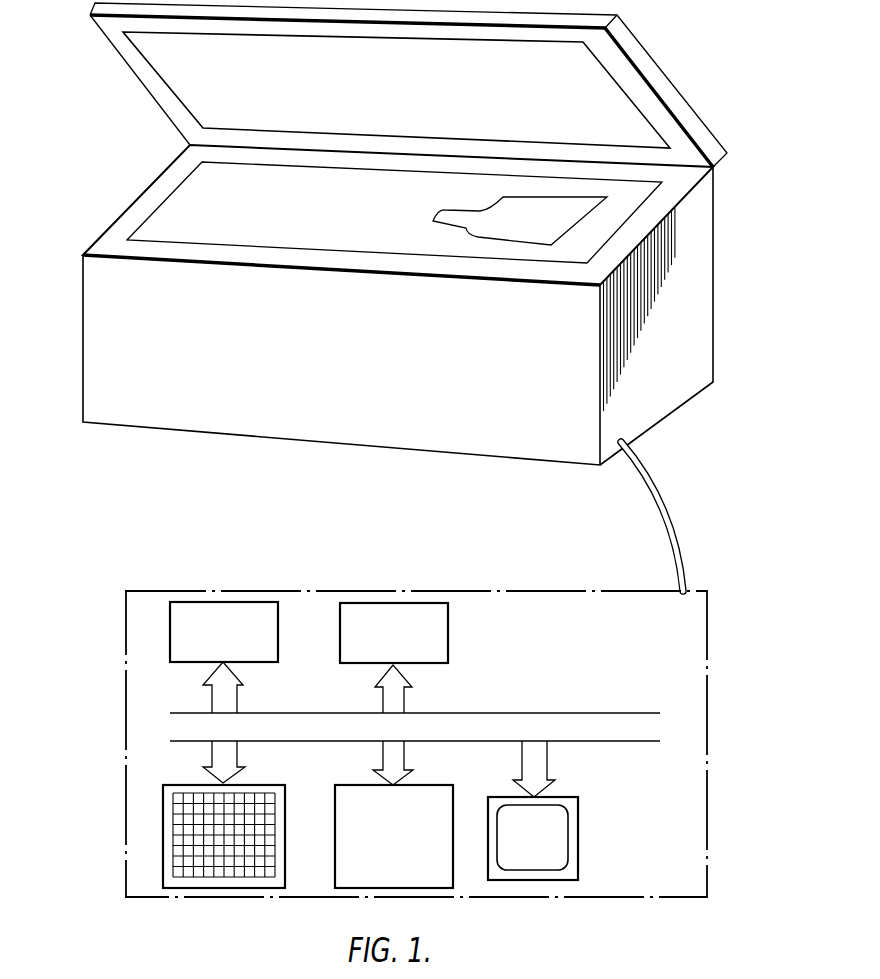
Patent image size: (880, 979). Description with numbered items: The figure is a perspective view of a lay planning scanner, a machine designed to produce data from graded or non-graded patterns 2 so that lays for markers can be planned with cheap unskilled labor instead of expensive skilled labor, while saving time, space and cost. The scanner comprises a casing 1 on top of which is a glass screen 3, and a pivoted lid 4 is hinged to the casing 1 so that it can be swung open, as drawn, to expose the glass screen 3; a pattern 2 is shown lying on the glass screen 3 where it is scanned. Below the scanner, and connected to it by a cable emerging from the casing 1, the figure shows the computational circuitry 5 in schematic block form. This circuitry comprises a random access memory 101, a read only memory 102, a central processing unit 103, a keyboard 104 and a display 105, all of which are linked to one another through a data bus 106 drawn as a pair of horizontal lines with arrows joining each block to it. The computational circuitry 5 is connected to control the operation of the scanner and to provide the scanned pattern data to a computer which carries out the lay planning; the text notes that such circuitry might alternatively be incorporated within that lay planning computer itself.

The casing 1 is at (675, 409).
The pattern 2 is at (580, 209).
The glass screen 3 is at (310, 221).
The pivoted lid 4 is at (679, 93).
The computational circuitry 5 is at (250, 584).
The random access memory 101 is at (244, 646).
The read only memory 102 is at (416, 646).
The central processing unit 103 is at (417, 852).
The keyboard 104 is at (162, 787).
The display 105 is at (557, 852).
The data bus 106 is at (540, 723).